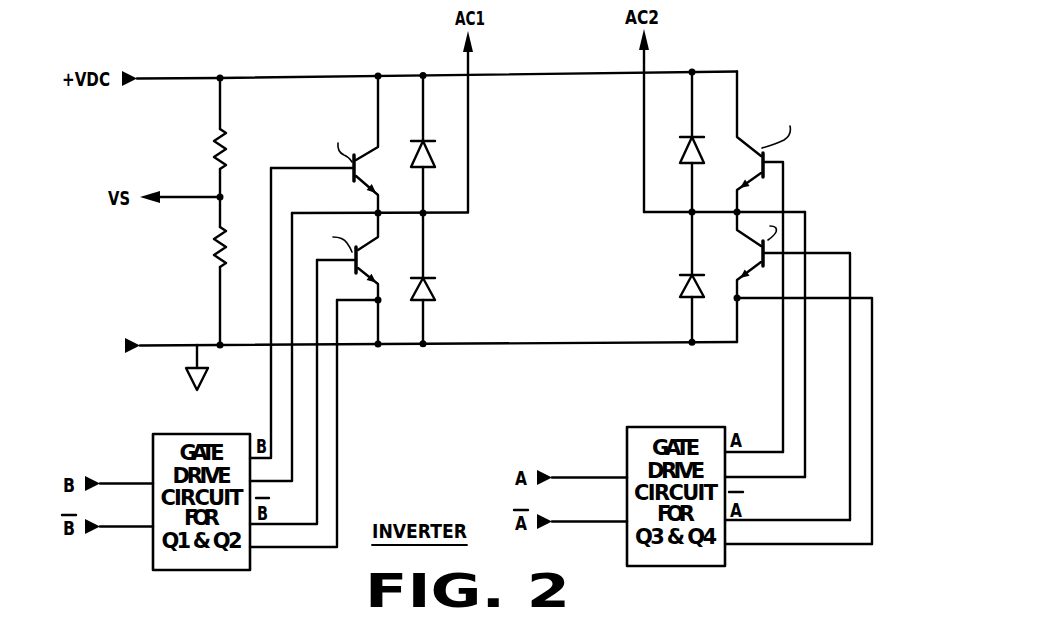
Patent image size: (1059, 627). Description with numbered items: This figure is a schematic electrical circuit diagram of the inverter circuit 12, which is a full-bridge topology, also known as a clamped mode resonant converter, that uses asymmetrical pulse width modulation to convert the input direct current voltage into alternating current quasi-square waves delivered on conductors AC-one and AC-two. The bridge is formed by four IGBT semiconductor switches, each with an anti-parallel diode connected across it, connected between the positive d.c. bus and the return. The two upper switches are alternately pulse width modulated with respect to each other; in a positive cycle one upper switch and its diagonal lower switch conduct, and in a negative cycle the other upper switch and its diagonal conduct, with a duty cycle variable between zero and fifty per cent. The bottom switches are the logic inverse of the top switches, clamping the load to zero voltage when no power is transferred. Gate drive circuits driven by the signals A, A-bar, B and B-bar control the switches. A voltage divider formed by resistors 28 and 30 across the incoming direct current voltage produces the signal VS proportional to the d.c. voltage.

The inverter circuit 12 is at (545, 278).
The resistor 28 is at (215, 151).
The resistor 30 is at (217, 253).